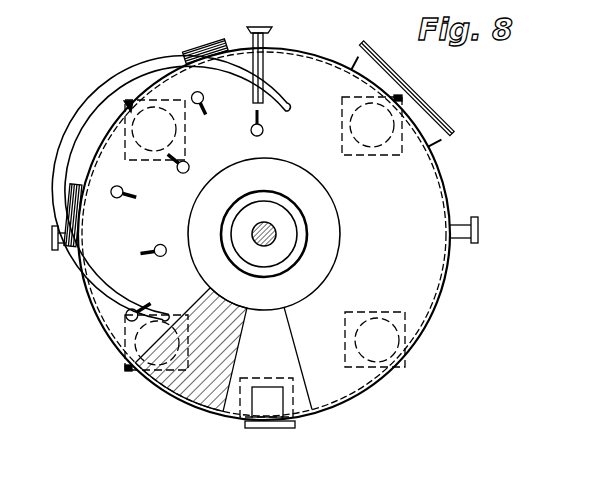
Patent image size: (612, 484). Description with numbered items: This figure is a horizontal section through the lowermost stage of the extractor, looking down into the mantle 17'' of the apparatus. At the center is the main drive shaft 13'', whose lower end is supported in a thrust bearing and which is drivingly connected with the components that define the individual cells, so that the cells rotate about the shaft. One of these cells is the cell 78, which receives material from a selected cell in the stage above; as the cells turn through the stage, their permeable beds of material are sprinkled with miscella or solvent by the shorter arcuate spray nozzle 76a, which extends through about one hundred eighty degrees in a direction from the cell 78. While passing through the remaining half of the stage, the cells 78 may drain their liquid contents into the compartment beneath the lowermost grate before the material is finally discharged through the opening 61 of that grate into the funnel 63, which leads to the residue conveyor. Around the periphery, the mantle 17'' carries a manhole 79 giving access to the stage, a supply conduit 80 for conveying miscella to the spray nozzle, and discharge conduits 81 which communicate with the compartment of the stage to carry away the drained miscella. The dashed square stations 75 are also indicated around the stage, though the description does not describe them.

The main drive shaft 13'' is at (283, 234).
The mantle 17'' is at (283, 229).
The opening 61 is at (291, 321).
The funnel 63 is at (245, 430).
The dashed square stations 75 is at (422, 368).
The arcuate spray nozzle 76a is at (171, 188).
The cell 78 is at (180, 393).
The manhole 79 is at (436, 116).
The supply conduit 80 is at (268, 30).
The discharge conduit 81 is at (53, 267).